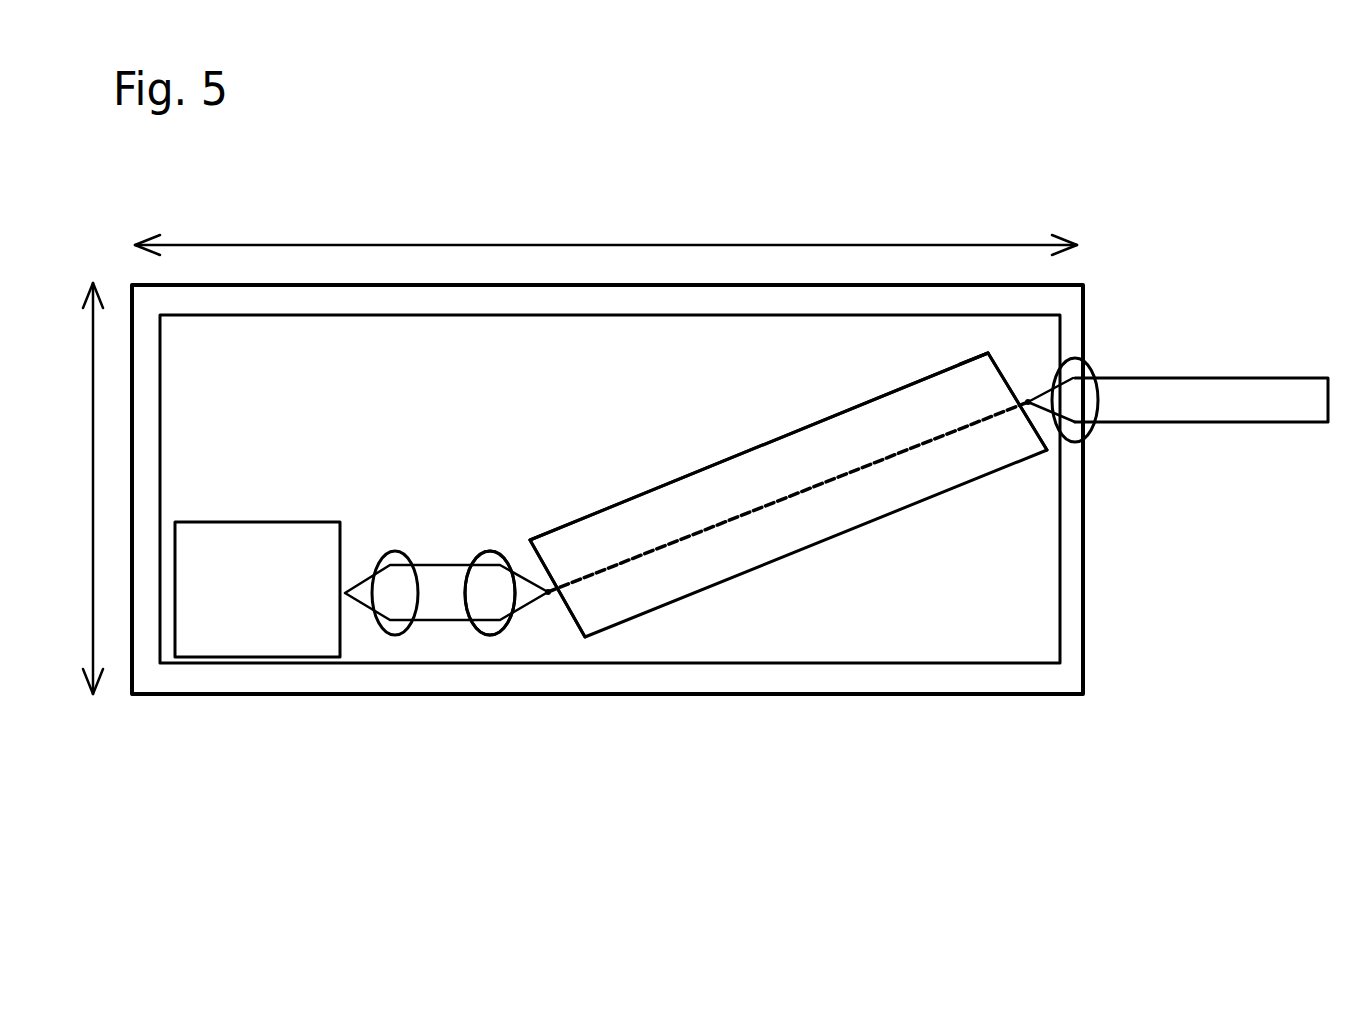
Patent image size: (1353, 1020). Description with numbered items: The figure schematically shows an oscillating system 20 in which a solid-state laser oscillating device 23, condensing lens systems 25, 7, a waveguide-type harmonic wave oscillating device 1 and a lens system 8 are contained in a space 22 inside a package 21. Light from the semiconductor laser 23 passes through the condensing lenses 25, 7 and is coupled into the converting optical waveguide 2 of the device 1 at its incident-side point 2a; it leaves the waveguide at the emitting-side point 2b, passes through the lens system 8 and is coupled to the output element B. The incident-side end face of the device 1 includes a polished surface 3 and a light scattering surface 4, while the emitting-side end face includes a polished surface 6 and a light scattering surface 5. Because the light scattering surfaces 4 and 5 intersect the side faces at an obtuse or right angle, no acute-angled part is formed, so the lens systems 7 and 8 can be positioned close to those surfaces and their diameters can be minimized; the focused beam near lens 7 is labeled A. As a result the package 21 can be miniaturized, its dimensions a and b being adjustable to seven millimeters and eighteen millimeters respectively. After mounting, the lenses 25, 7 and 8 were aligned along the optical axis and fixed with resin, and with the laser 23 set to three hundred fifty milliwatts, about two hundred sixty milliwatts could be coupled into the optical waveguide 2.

The waveguide-type harmonic wave oscillating device 1 is at (808, 426).
The converting optical waveguide 2 is at (768, 508).
The light incident point 2a is at (545, 603).
The light exit point 2b is at (1028, 397).
The polished surface 3 is at (572, 627).
The light scattering surface 4 is at (533, 560).
The light scattering surface 5 is at (1058, 445).
The polished surface 6 is at (1000, 360).
The condensing lens system 7 is at (490, 552).
The lens system 8 is at (1084, 370).
The oscillating system 20 is at (1087, 280).
The package 21 is at (1078, 311).
The space 22 is at (527, 400).
The solid-state laser oscillating device 23 is at (292, 532).
The condensing lens system 25 is at (396, 550).
The focused light beam A is at (500, 603).
The optical fiber B is at (1222, 392).
The package dimension a is at (83, 488).
The package dimension b is at (606, 227).